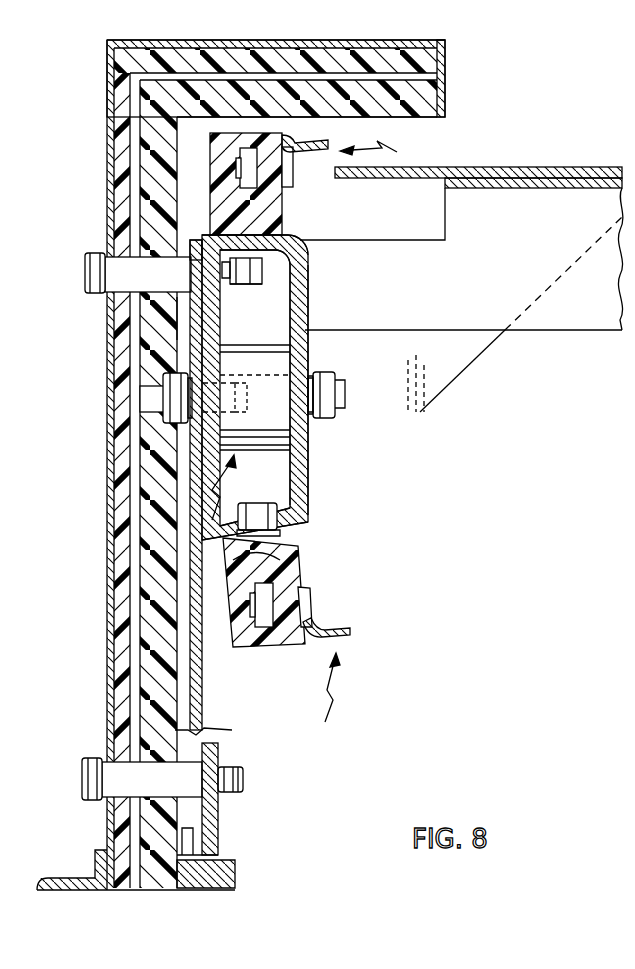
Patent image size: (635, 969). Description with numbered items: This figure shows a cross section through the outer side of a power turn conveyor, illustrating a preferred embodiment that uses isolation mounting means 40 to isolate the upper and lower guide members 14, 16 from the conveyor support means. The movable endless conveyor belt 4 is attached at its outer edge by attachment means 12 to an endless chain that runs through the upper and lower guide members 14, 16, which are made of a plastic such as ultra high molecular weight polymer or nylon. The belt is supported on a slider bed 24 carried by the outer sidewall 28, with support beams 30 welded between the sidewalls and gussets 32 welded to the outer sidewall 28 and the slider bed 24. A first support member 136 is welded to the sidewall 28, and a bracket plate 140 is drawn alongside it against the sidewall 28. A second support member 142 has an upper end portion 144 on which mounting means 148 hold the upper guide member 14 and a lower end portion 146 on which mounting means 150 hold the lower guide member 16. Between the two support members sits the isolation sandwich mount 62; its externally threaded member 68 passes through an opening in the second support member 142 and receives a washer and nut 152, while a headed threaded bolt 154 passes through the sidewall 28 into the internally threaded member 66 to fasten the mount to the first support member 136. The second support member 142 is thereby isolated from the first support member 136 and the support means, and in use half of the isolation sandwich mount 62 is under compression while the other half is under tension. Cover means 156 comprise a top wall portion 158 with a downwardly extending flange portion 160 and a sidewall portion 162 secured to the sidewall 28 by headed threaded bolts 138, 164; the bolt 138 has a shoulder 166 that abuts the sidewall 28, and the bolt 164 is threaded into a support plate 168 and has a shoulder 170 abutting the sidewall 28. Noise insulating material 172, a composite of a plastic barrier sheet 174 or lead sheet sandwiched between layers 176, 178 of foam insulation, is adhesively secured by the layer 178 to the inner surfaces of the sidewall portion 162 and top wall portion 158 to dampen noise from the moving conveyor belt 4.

The movable endless conveyor belt 4 is at (556, 172).
The attachment means 12 is at (368, 444).
The upper guide member 14 is at (258, 150).
The lower guide member 16 is at (246, 648).
The slider bed 24 is at (553, 184).
The outer sidewall 28 is at (202, 701).
The support beam 30 is at (552, 330).
The gusset 32 is at (455, 378).
The isolation mounting means 40 is at (221, 495).
The isolation sandwich mount 62 is at (280, 414).
The internally threaded member 66 is at (238, 377).
The externally threaded member 68 is at (338, 385).
The first support member 136 is at (222, 325).
The headed threaded bolt 138 is at (122, 267).
The bracket plate 140 is at (199, 242).
The second support member 142 is at (308, 463).
The upper end portion 144 is at (290, 243).
The lower end portion 146 is at (285, 533).
The mounting means 148 is at (243, 288).
The mounting means 150 is at (258, 508).
The washer and nut 152 is at (336, 420).
The headed threaded bolt 154 is at (168, 394).
The cover means 156 is at (534, 100).
The top wall portion 158 is at (120, 43).
The flange portion 160 is at (443, 100).
The sidewall portion 162 is at (107, 150).
The headed threaded bolt 164 is at (125, 773).
The shoulder 166 is at (187, 297).
The support plate 168 is at (222, 840).
The shoulder 170 is at (213, 806).
The noise insulating material 172 is at (205, 732).
The plastic barrier sheet 174 is at (428, 80).
The layer of foam insulation 176 is at (410, 110).
The layer of foam insulation 178 is at (430, 66).